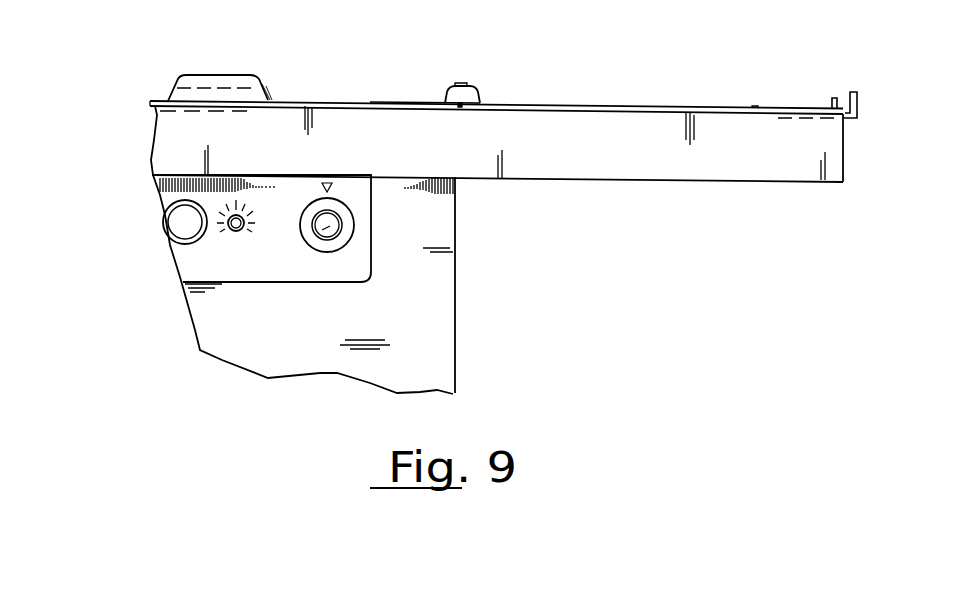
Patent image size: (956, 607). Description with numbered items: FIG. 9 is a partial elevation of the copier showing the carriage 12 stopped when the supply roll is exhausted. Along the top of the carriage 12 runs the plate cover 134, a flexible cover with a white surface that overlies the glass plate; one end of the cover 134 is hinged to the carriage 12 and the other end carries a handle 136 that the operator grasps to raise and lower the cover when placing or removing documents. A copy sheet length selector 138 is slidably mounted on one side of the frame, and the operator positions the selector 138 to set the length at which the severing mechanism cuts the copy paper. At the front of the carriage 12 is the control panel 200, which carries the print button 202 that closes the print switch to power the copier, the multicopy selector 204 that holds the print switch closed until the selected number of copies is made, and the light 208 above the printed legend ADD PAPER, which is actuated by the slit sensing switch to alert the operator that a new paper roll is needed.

The carriage 12 is at (627, 181).
The plate cover 134 is at (373, 102).
The handle 136 is at (267, 80).
The copy sheet length selector 138 is at (483, 95).
The control panel 200 is at (193, 260).
The print button 202 is at (163, 258).
The multicopy selector 204 is at (353, 233).
The light 208 is at (245, 222).